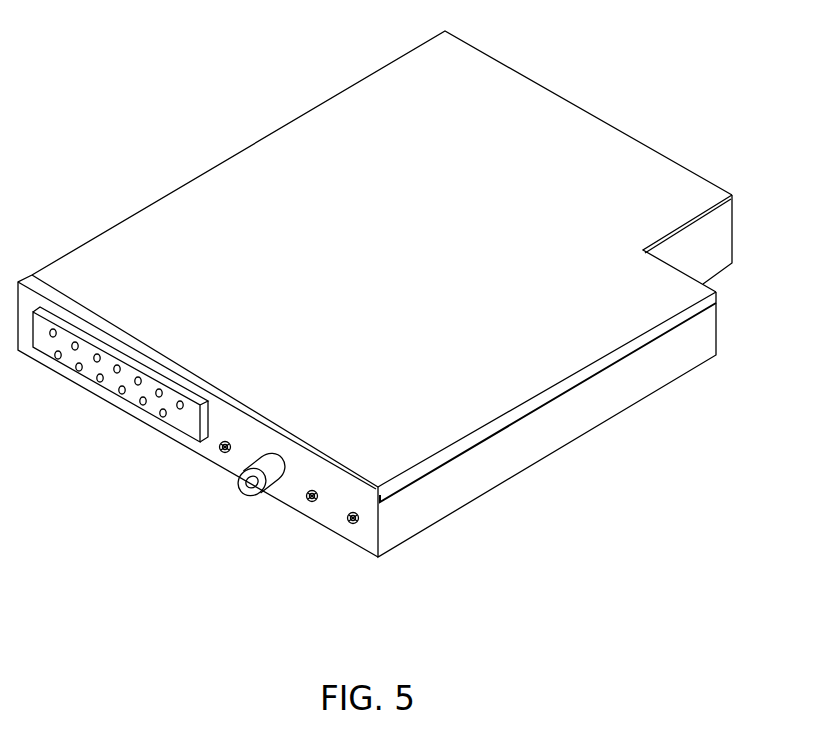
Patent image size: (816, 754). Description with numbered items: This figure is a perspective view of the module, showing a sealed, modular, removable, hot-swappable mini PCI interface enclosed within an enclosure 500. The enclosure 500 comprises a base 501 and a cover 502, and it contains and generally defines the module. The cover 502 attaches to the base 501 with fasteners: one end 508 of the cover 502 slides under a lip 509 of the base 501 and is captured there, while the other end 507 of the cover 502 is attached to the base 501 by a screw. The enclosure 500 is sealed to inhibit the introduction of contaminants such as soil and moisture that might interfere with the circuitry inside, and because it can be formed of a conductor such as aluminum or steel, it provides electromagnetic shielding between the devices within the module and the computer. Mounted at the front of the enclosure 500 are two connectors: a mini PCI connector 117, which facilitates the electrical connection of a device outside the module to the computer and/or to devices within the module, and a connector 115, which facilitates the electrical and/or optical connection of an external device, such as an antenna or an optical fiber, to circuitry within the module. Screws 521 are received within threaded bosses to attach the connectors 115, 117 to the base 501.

The enclosure 500 is at (392, 303).
The base 501 is at (543, 431).
The cover 502 is at (228, 175).
The other end of the cover 507 is at (681, 157).
The one end of the cover 508 is at (388, 493).
The lip of the base 509 is at (362, 462).
The mini PCI connector 117 is at (113, 350).
The connector 115 is at (265, 495).
The screws 521 is at (228, 440).